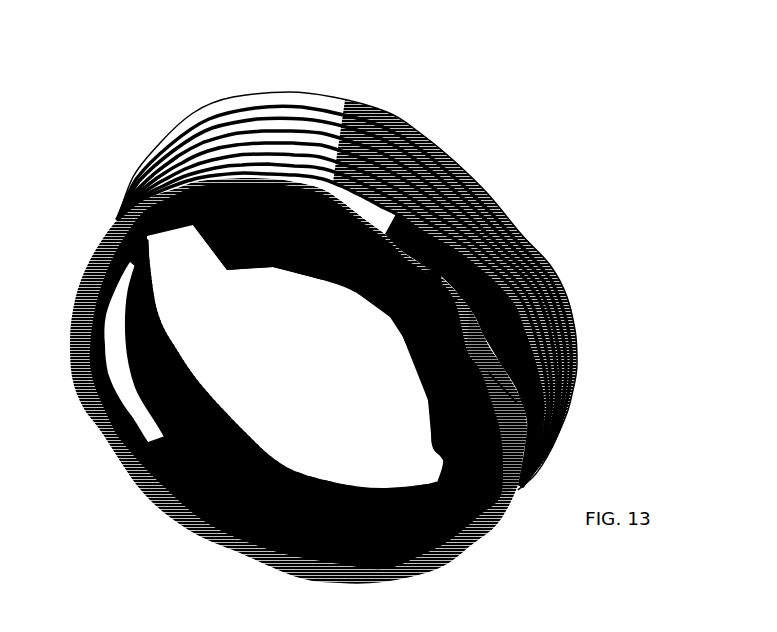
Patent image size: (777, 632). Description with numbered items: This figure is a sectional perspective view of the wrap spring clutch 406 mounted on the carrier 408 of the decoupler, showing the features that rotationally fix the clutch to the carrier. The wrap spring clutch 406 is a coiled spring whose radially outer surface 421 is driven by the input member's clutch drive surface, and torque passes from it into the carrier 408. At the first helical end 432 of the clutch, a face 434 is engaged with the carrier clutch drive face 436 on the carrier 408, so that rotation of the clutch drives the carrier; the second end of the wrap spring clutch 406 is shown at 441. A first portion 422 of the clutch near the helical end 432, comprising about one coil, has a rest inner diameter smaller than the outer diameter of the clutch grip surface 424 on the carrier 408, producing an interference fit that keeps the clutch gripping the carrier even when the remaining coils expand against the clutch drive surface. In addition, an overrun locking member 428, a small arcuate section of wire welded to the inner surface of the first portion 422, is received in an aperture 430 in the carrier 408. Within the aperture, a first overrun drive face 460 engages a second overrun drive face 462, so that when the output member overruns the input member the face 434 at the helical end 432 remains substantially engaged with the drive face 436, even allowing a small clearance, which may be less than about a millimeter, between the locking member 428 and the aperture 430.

The wrap spring clutch 406 is at (494, 222).
The carrier 408 is at (83, 288).
The radially outer surface 421 is at (194, 148).
The first portion 422 is at (517, 403).
The clutch grip surface 424 is at (497, 429).
The overrun locking member 428 is at (430, 284).
The aperture 430 is at (465, 243).
The first helical end 432 is at (500, 368).
The face at the first helical end 434 is at (270, 247).
The carrier clutch drive face 436 is at (353, 260).
The second end of the wrap spring clutch 441 is at (304, 98).
The first overrun drive face 460 is at (503, 345).
The second overrun drive face 462 is at (483, 295).